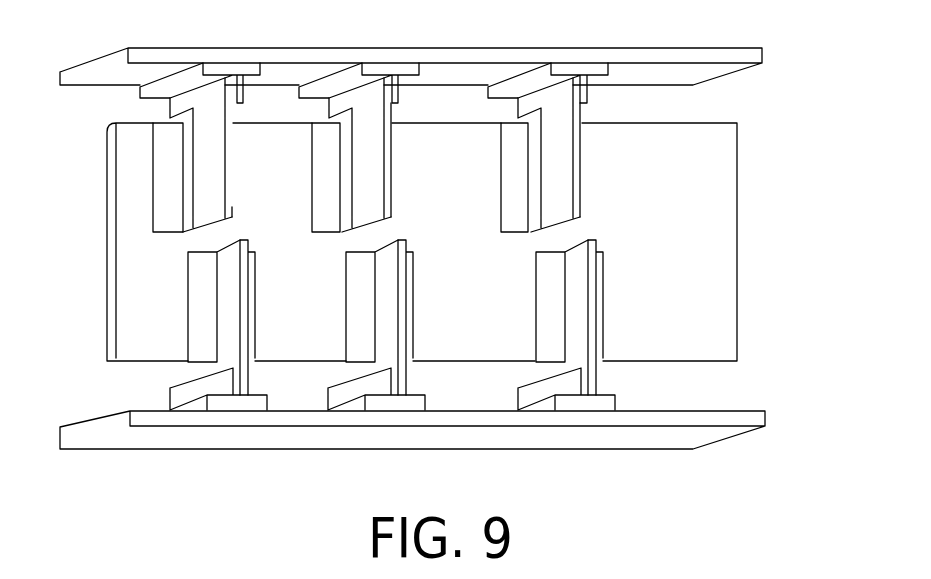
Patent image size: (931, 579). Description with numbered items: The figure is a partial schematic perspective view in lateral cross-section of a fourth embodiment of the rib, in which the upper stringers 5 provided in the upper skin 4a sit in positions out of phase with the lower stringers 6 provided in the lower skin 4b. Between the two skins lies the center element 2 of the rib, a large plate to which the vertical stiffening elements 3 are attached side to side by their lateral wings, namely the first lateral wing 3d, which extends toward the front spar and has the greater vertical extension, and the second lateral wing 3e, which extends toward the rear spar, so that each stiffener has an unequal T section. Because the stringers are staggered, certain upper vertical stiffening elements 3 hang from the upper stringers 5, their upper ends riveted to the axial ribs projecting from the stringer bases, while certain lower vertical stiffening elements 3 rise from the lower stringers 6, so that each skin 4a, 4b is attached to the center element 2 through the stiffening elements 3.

The center element of the rib 2 is at (668, 320).
The vertical stiffening elements 3 is at (230, 268).
The first lateral wing 3d is at (168, 177).
The second lateral wing 3e is at (603, 285).
The upper skin 4a is at (437, 48).
The lower skin 4b is at (520, 452).
The upper stringers 5 is at (573, 68).
The lower stringers 6 is at (253, 402).